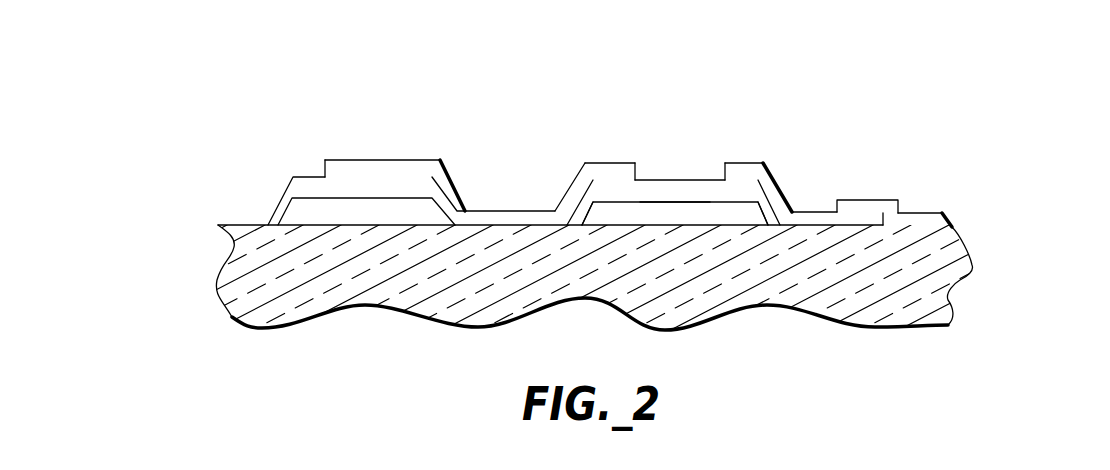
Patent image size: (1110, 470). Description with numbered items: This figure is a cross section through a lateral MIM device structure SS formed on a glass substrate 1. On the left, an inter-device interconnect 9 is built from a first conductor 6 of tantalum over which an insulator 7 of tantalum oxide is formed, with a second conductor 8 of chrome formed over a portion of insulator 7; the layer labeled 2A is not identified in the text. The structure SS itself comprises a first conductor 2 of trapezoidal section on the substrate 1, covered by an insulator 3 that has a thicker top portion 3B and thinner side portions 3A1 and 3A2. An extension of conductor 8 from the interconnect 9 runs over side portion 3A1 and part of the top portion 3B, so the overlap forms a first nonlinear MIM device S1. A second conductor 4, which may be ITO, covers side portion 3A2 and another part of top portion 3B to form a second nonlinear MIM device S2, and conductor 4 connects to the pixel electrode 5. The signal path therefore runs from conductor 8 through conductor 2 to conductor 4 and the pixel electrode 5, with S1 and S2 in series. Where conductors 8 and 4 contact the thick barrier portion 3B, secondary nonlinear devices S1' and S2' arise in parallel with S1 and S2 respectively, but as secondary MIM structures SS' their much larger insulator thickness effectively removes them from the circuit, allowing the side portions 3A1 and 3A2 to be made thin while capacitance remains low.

The substrate 1 is at (888, 307).
The first conductor 2 is at (668, 217).
The insulating film 2A is at (447, 205).
The insulator 3 is at (676, 185).
The first insulator side portion 3A1 is at (579, 216).
The second insulator side portion 3A2 is at (772, 216).
The top portion of insulator 3B is at (721, 197).
The second conductor 4 is at (814, 217).
The pixel electrode 5 is at (916, 221).
The first conductor 6 is at (347, 212).
The insulator 7 is at (305, 182).
The second conductor 8 is at (429, 174).
The inter-device interconnect 9 is at (360, 150).
The first nonlinear MIM device S1 is at (546, 173).
The secondary nonlinear device S1' is at (650, 158).
The second nonlinear MIM device S2 is at (802, 177).
The secondary nonlinear device S2' is at (735, 140).
The MIM device structure SS is at (681, 107).
The secondary MIM structures SS' is at (672, 130).